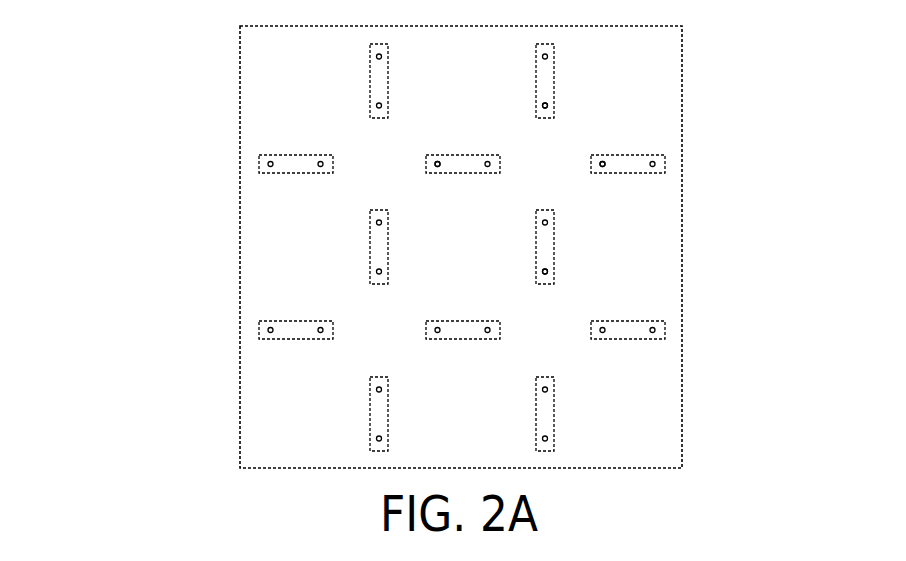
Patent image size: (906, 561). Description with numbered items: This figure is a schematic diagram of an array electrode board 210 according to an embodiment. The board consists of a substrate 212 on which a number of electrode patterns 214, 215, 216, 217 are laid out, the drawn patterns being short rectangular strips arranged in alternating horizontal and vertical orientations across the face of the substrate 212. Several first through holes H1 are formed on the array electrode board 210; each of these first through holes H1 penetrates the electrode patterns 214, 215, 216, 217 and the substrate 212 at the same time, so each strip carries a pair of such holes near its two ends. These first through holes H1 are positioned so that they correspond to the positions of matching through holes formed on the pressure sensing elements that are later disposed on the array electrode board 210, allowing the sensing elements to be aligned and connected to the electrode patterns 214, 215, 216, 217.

The array electrode board 210 is at (80, 26).
The substrate 212 is at (682, 209).
The electrode pattern 214 is at (545, 242).
The electrode pattern 215 is at (630, 164).
The electrode pattern 216 is at (545, 78).
The electrode pattern 217 is at (461, 164).
The first through holes H1 is at (548, 106).